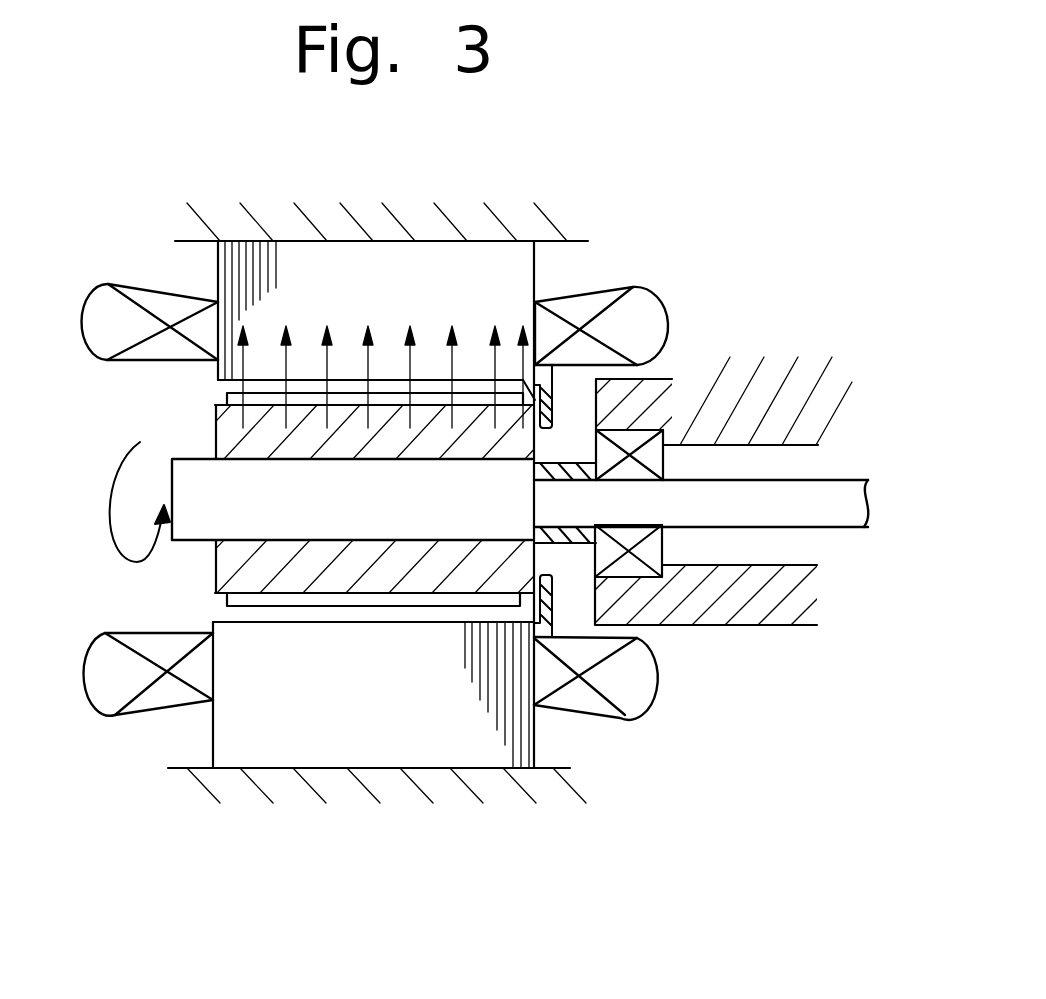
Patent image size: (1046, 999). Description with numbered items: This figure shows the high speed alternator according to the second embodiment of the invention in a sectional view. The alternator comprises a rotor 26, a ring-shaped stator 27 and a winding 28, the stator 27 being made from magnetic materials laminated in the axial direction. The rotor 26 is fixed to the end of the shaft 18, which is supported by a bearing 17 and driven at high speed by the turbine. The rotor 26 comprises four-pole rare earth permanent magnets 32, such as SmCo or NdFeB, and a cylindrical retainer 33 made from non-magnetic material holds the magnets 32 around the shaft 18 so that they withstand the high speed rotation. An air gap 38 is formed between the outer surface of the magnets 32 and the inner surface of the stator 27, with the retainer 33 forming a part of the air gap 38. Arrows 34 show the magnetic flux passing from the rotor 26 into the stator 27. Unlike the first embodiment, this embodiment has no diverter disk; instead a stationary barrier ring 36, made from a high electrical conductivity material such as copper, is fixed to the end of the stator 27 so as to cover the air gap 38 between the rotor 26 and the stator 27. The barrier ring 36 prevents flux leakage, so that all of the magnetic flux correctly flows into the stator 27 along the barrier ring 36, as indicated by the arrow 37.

The bearing 17 is at (662, 543).
The shaft 18 is at (833, 480).
The rotor 26 is at (205, 567).
The stator 27 is at (513, 735).
The winding 28 is at (662, 294).
The permanent magnets 32 is at (217, 432).
The cylindrical retainer 33 is at (325, 600).
The arrows showing magnetic flux 34 is at (243, 383).
The stationary barrier ring 36 is at (557, 386).
The arrow showing magnetic flux along the barrier ring 37 is at (535, 437).
The air gap 38 is at (235, 614).